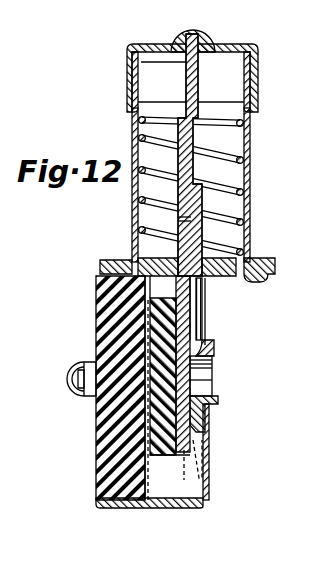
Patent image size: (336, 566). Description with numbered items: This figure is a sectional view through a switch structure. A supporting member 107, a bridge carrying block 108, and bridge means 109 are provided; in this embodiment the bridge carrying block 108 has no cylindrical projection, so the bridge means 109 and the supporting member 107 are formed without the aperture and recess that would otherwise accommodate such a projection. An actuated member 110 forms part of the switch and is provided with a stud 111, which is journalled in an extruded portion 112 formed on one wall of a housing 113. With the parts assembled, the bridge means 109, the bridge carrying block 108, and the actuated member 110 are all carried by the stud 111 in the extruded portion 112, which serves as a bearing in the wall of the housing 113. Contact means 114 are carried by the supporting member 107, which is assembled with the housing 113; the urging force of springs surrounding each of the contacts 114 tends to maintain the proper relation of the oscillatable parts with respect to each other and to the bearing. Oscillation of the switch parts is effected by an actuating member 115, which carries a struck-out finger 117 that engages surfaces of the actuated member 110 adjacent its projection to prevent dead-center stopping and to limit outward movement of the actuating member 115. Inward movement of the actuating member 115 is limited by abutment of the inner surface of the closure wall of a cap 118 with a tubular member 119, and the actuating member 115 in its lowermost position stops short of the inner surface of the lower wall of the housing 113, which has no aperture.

The supporting member 107 is at (95, 489).
The bridge carrying block 108 is at (157, 458).
The bridge means 109 is at (147, 330).
The actuated member 110 is at (205, 422).
The stud 111 is at (266, 389).
The extruded portion 112 is at (266, 356).
The housing 113 is at (262, 496).
The contact means 114 is at (58, 404).
The actuating member 115 is at (201, 142).
The struck-out finger 117 is at (206, 440).
The cap 118 is at (300, 96).
The tubular member 119 is at (300, 216).